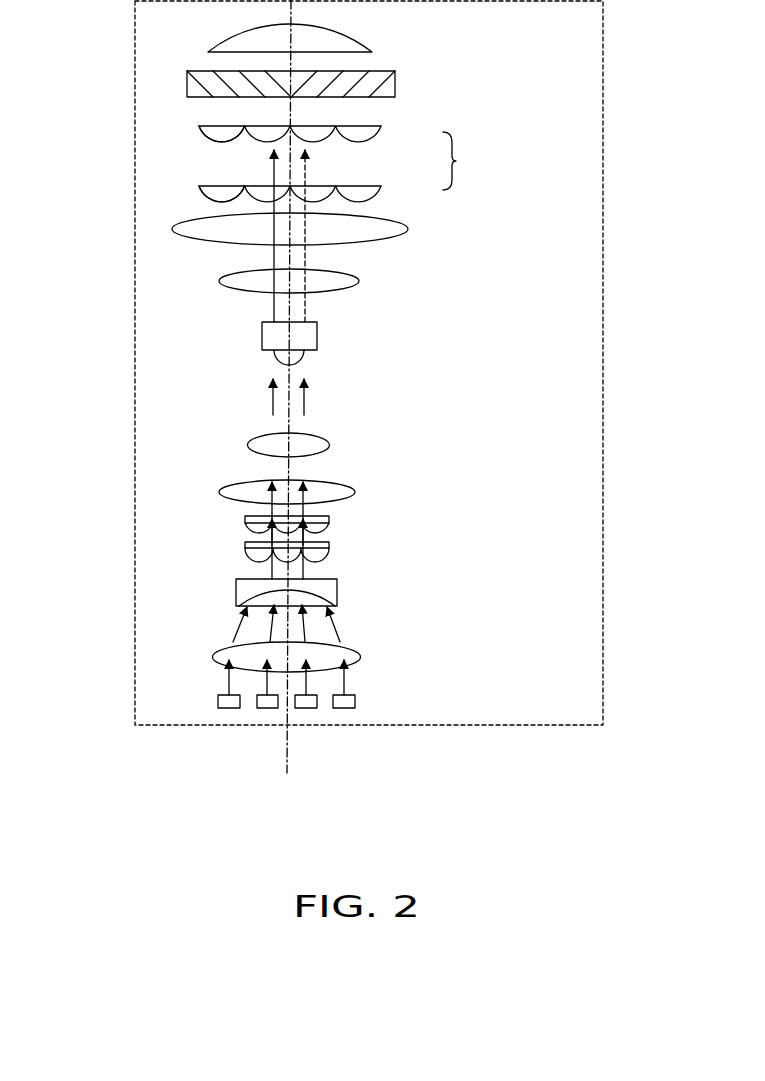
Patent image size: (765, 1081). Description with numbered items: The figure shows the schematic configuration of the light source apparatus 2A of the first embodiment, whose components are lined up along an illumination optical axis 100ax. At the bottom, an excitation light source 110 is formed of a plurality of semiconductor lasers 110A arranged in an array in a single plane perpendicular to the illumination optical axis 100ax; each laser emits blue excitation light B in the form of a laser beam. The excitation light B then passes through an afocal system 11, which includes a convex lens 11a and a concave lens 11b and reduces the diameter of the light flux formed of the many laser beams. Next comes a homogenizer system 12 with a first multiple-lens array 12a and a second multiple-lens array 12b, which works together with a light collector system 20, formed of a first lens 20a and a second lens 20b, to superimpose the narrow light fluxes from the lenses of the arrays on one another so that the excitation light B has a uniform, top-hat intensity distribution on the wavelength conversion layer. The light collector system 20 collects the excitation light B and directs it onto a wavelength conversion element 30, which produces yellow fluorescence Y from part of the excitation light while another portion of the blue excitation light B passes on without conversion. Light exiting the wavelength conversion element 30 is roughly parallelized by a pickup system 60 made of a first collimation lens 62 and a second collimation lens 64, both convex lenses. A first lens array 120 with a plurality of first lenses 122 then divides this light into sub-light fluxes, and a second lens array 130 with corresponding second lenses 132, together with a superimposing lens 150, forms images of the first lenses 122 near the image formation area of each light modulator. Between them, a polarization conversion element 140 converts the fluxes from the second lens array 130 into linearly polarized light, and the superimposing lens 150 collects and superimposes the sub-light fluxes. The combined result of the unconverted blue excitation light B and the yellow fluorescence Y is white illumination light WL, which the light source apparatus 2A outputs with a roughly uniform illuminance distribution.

The light source apparatus 2A is at (603, 452).
The illumination optical axis 100ax is at (287, 762).
The superimposing lens 150 is at (375, 48).
The polarization conversion element 140 is at (396, 85).
The second lens array 130 is at (383, 128).
The second lens 132 is at (203, 138).
The first lens array 120 is at (381, 190).
The first lens 122 is at (200, 200).
The pickup system 60 is at (219, 263).
The second collimation lens 64 is at (197, 233).
The first collimation lens 62 is at (230, 283).
The wavelength conversion element 30 is at (305, 338).
The light collector system 20 is at (386, 454).
The second lens 20b is at (322, 436).
The first lens 20a is at (353, 490).
The homogenizer system 12 is at (382, 525).
The second multiple-lens array 12b is at (330, 528).
The first multiple-lens array 12a is at (328, 558).
The afocal system 11 is at (365, 620).
The concave lens 11b is at (337, 590).
The convex lens 11a is at (345, 645).
The excitation light source 110 is at (266, 690).
The semiconductor laser 110A is at (218, 702).
The yellow fluorescence Y is at (307, 163).
The blue excitation light B is at (303, 180).
The illumination light WL is at (466, 161).